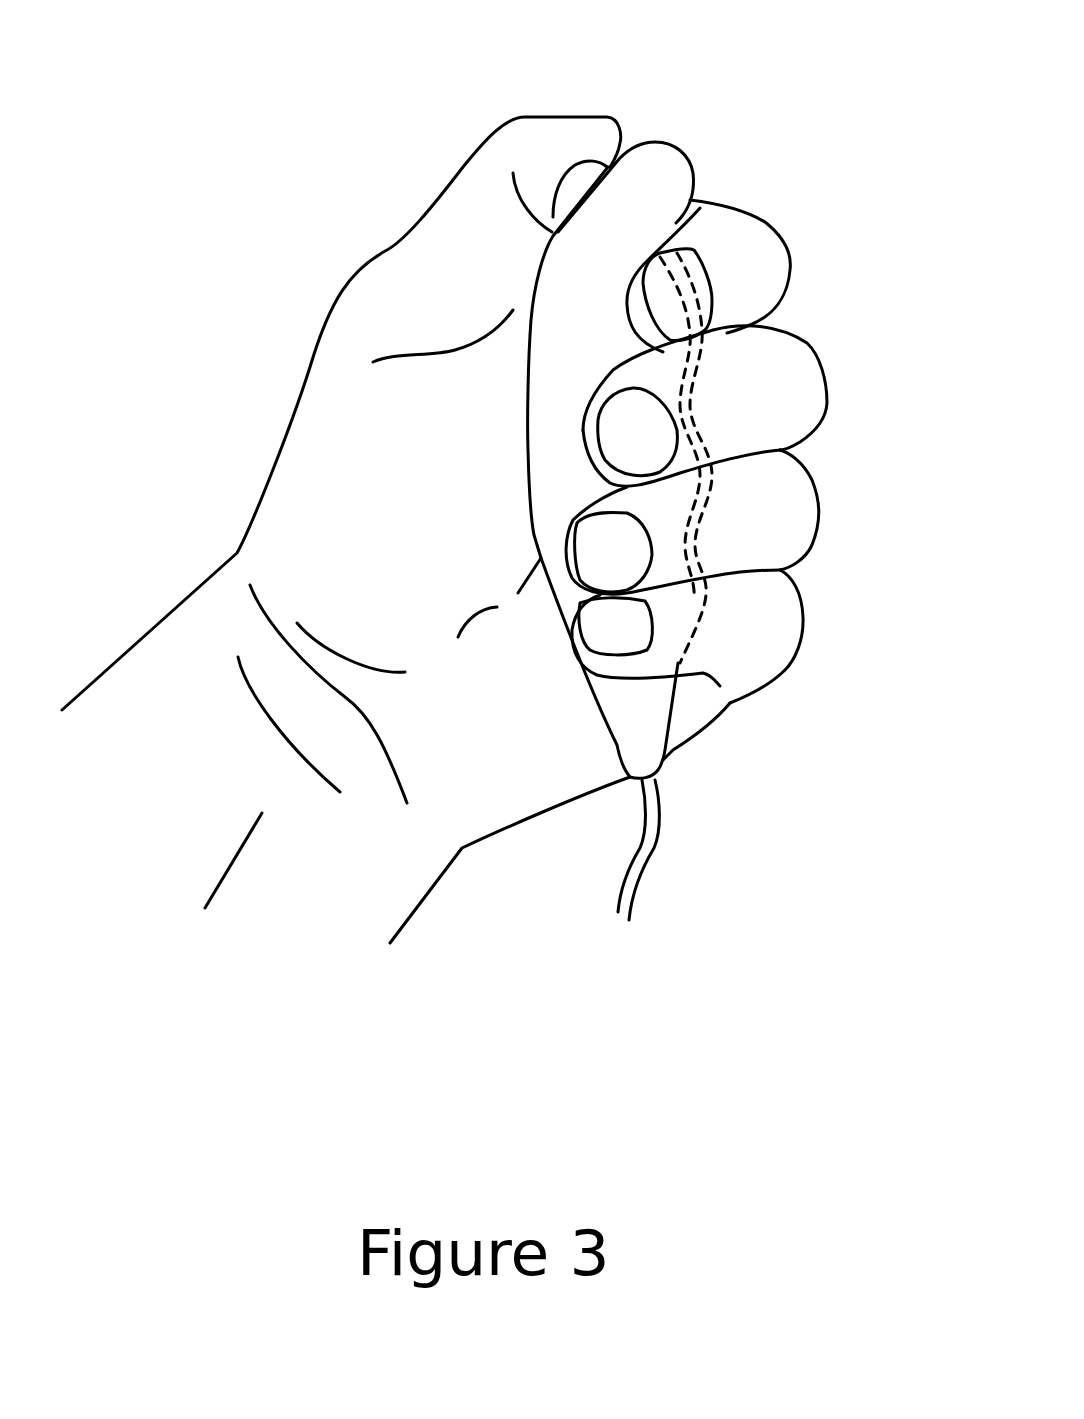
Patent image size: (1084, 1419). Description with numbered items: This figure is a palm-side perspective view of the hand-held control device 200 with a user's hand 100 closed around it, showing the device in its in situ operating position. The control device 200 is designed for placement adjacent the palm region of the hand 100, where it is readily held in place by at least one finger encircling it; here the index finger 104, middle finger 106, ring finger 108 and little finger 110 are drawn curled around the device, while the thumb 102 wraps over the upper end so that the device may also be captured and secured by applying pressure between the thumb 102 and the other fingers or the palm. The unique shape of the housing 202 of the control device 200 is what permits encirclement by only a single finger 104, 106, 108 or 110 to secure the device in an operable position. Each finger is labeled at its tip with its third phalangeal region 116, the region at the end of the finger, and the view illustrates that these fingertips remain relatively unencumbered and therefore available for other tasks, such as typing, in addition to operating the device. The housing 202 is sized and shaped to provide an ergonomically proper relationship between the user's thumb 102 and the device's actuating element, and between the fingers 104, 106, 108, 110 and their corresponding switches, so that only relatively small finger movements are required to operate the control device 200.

The hand 100 is at (184, 202).
The thumb 102 is at (437, 220).
The index finger 104 is at (777, 247).
The middle finger 106 is at (805, 362).
The ring finger 108 is at (805, 483).
The little finger 110 is at (790, 593).
The third phalangeal region 116 is at (770, 279).
The control device 200 is at (650, 115).
The housing 202 is at (680, 157).